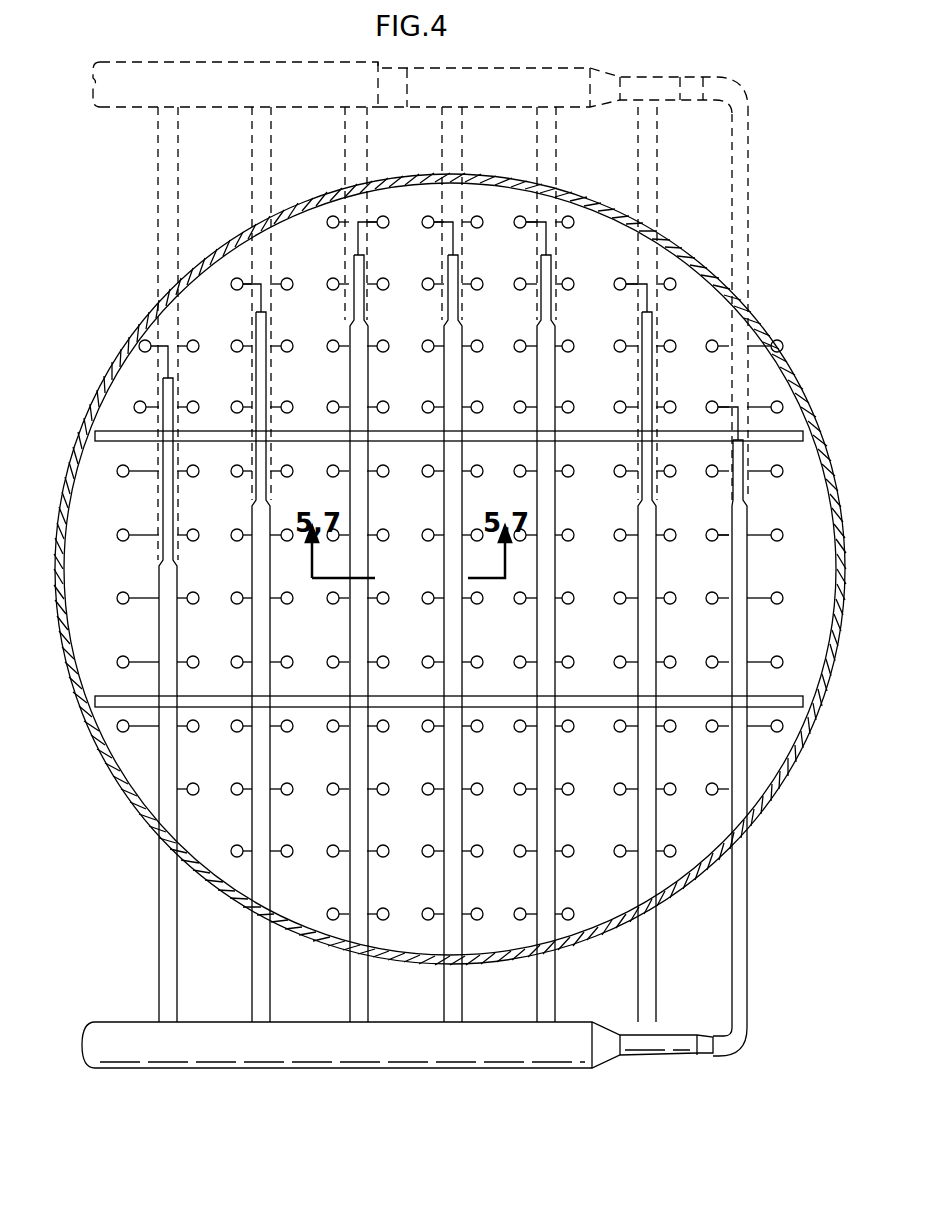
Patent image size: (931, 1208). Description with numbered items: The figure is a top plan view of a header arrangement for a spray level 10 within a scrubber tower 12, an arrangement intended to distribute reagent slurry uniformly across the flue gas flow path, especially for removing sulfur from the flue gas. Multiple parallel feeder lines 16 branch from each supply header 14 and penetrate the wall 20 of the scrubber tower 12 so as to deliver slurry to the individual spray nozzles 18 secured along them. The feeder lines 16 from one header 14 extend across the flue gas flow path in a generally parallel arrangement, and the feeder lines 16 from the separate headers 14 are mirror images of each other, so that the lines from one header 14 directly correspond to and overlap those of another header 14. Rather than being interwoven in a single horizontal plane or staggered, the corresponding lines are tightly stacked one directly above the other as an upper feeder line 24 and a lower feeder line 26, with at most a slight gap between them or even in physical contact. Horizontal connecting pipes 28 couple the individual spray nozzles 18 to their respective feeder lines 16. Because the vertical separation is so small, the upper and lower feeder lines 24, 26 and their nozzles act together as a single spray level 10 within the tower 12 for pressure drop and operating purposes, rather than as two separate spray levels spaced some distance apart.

The spray level 10 is at (137, 323).
The scrubber tower 12 is at (750, 318).
The supply header 14 is at (162, 62).
The feeder line 16 is at (345, 152).
The spray nozzle 18 is at (556, 348).
The wall 20 is at (62, 535).
The upper feeder line 24 is at (750, 920).
The lower feeder line 26 is at (446, 158).
The horizontal connecting pipe 28 is at (727, 536).